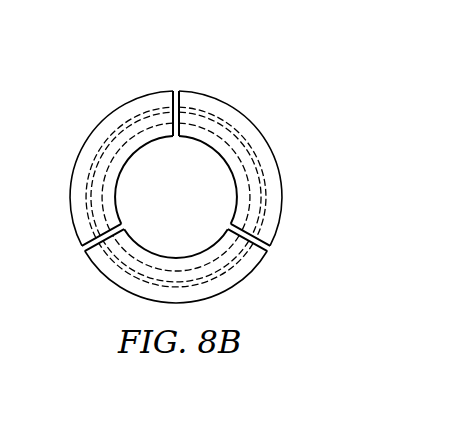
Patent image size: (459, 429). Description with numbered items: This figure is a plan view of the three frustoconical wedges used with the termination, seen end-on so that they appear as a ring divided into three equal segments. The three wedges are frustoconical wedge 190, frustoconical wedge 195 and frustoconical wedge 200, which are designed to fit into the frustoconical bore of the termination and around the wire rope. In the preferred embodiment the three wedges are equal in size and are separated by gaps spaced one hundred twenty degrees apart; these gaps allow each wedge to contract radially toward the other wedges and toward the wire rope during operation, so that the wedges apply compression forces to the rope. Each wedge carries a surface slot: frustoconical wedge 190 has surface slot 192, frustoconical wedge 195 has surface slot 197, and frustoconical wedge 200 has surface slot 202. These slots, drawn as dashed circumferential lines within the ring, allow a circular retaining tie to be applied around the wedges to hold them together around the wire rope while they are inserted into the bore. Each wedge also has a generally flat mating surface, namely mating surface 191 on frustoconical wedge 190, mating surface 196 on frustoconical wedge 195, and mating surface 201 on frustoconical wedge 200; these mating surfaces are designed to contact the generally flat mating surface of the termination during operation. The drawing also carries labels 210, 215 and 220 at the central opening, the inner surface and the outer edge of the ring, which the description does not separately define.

The frustoconical wedge 190 is at (88, 138).
The generally flat mating surface 191 is at (136, 107).
The surface slot 192 is at (80, 180).
The frustoconical wedge 195 is at (203, 94).
The generally flat mating surface 196 is at (250, 123).
The surface slot 197 is at (273, 180).
The frustoconical wedge 200 is at (237, 283).
The generally flat mating surface 201 is at (117, 278).
The surface slot 202 is at (250, 255).
The central opening 210 is at (193, 191).
The inner surface 215 is at (235, 210).
The gap edge 220 is at (280, 225).